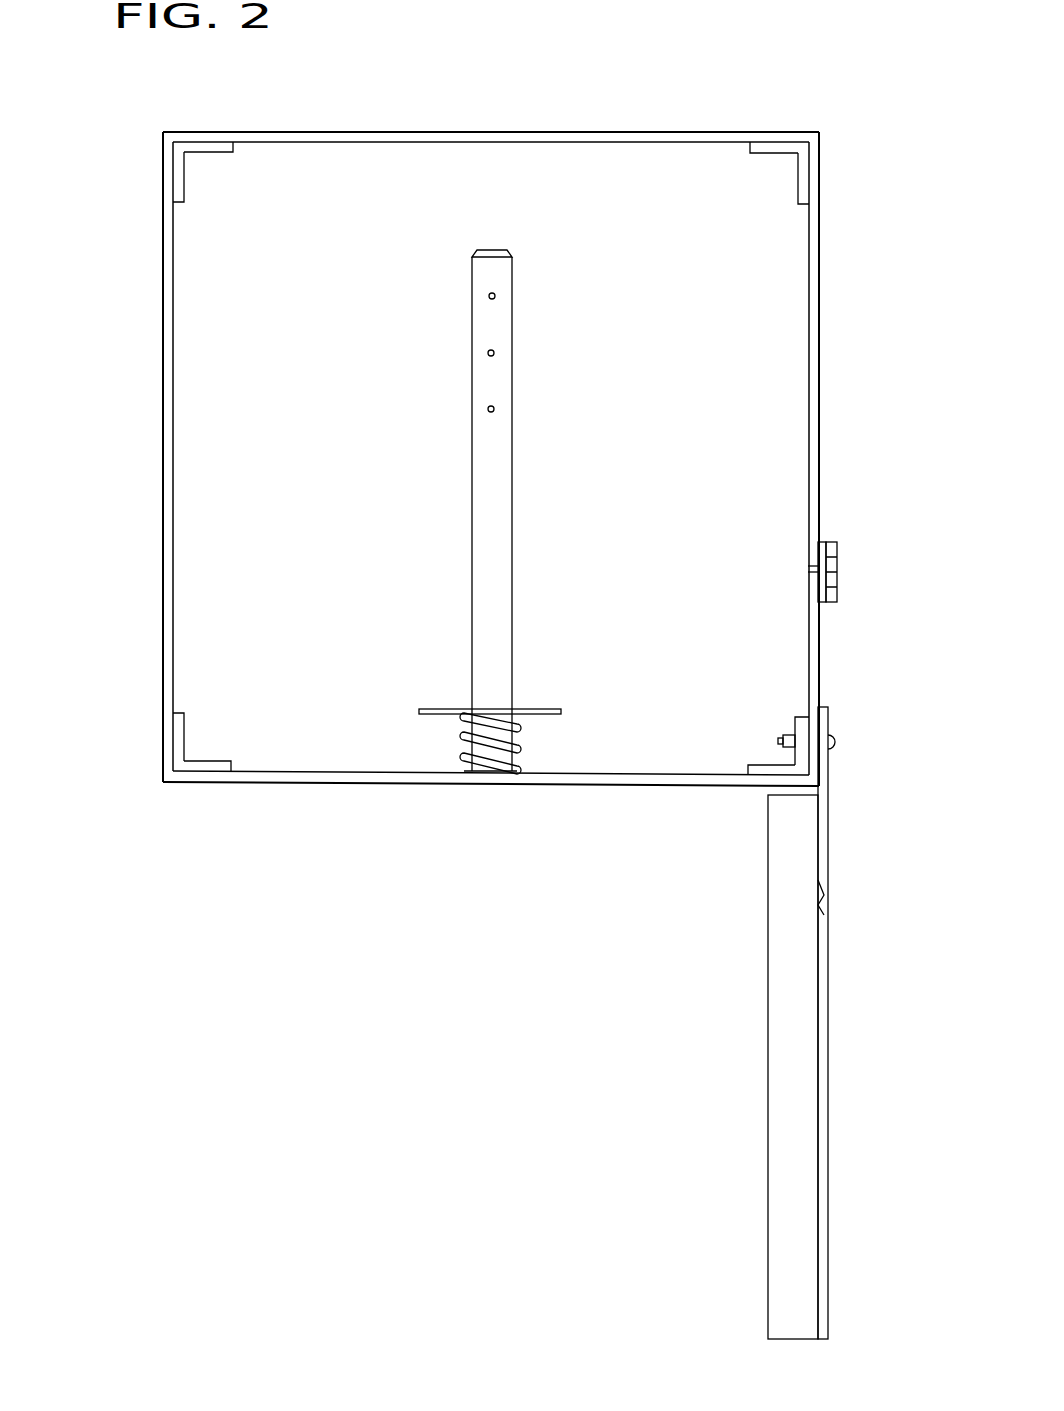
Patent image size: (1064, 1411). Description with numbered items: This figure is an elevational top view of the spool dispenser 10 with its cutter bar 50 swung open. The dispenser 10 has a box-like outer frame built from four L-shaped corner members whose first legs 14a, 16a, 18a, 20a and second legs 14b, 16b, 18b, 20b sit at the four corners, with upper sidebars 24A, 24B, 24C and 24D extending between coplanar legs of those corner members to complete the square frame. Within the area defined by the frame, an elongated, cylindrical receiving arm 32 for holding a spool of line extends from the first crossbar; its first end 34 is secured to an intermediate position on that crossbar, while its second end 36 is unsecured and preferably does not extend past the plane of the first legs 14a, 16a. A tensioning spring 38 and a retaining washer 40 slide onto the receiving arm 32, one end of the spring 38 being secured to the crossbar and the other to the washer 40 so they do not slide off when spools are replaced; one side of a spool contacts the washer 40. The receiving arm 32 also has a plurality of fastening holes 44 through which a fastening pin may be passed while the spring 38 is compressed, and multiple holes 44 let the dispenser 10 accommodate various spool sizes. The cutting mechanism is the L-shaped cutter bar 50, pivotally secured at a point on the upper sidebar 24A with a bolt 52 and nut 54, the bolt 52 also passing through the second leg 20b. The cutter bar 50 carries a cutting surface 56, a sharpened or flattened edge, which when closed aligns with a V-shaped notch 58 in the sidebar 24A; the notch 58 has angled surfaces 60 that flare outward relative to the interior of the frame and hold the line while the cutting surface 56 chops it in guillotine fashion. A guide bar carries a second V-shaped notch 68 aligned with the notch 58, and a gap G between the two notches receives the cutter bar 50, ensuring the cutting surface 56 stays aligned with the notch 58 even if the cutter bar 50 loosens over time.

The spool dispenser 10 is at (423, 35).
The first leg of corner member 14a is at (770, 145).
The second leg of corner member 14b is at (803, 178).
The first leg of corner member 16a is at (203, 147).
The second leg of corner member 16b is at (177, 173).
The first leg of corner member 18a is at (207, 770).
The second leg of corner member 18b is at (177, 740).
The first leg of corner member 20a is at (762, 770).
The second leg of corner member 20b is at (800, 730).
The upper sidebar 24A is at (812, 447).
The upper sidebar 24B is at (495, 140).
The upper sidebar 24C is at (168, 461).
The upper sidebar 24D is at (389, 778).
The receiving arm 32 is at (525, 472).
The first end of receiving arm 34 is at (522, 752).
The second end of receiving arm 36 is at (527, 242).
The tensioning spring 38 is at (465, 738).
The retaining washer 40 is at (550, 710).
The fastening holes 44 is at (494, 407).
The cutter bar 50 is at (848, 1026).
The bolt 52 is at (838, 742).
The nut 54 is at (795, 733).
The cutting surface 56 is at (825, 898).
The V-shaped notch 58 is at (798, 553).
The angled surfaces 60 is at (810, 583).
The second V-shaped notch 68 is at (847, 548).
The gap G is at (828, 537).